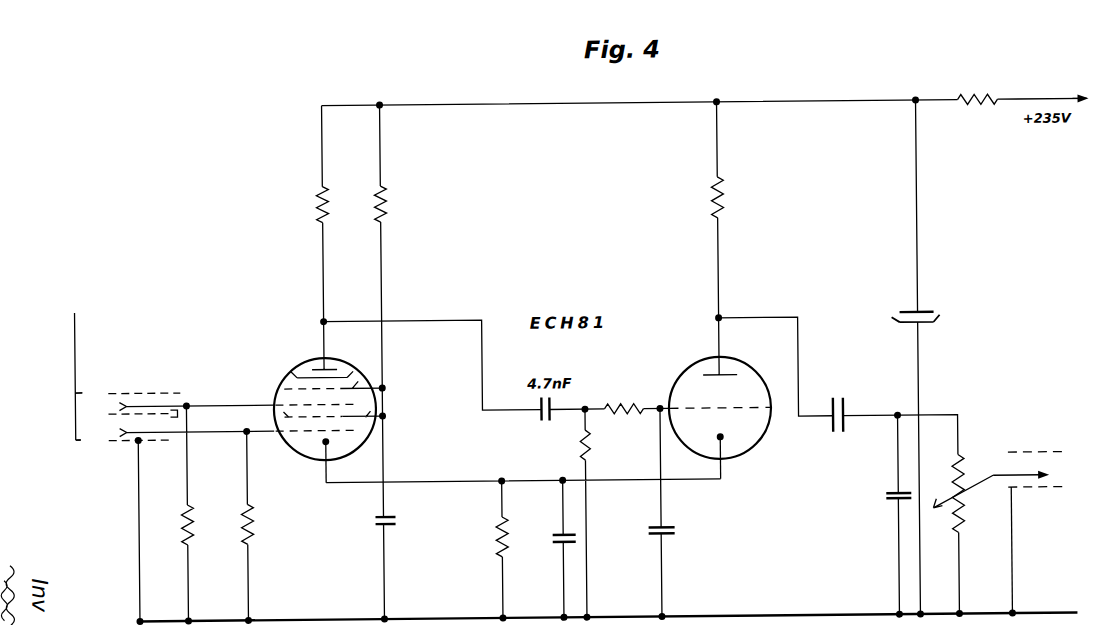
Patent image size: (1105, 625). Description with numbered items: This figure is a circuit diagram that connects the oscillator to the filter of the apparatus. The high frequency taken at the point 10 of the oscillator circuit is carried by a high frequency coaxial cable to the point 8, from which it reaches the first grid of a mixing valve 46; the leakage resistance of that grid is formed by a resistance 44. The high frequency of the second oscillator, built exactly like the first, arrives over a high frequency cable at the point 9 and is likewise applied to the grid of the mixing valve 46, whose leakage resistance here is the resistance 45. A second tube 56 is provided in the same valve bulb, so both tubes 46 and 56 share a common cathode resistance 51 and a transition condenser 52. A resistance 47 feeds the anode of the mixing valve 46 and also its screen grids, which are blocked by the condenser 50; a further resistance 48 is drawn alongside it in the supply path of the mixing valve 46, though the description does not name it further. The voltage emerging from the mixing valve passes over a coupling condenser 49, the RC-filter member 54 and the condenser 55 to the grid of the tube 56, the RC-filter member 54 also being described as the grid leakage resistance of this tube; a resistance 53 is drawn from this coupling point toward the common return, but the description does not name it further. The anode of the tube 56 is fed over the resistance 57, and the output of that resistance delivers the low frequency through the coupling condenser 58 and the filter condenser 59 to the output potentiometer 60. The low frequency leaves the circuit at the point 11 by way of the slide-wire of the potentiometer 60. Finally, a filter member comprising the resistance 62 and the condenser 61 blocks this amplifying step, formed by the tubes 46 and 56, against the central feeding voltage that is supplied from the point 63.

The point 8 is at (89, 368).
The point 9 is at (78, 416).
The point 10 is at (94, 417).
The point 11 is at (1070, 449).
The resistance 44 is at (189, 541).
The resistance 45 is at (249, 541).
The mixing valve 46 is at (344, 446).
The resistance 47 is at (327, 220).
The screen grid resistor 48 is at (385, 220).
The coupling condenser 49 is at (541, 418).
The condenser 50 is at (378, 523).
The common cathode resistance 51 is at (503, 556).
The transition condenser 52 is at (561, 534).
The grid leak resistor 53 is at (587, 458).
The RC-filter member 54 is at (636, 406).
The condenser 55 is at (672, 536).
The tube 56 is at (752, 439).
The resistance 57 is at (722, 219).
The coupling condenser 58 is at (843, 430).
The filter condenser 59 is at (900, 504).
The output potentiometer 60 is at (960, 536).
The condenser 61 is at (936, 324).
The resistance 62 is at (975, 108).
The point 63 is at (1086, 101).